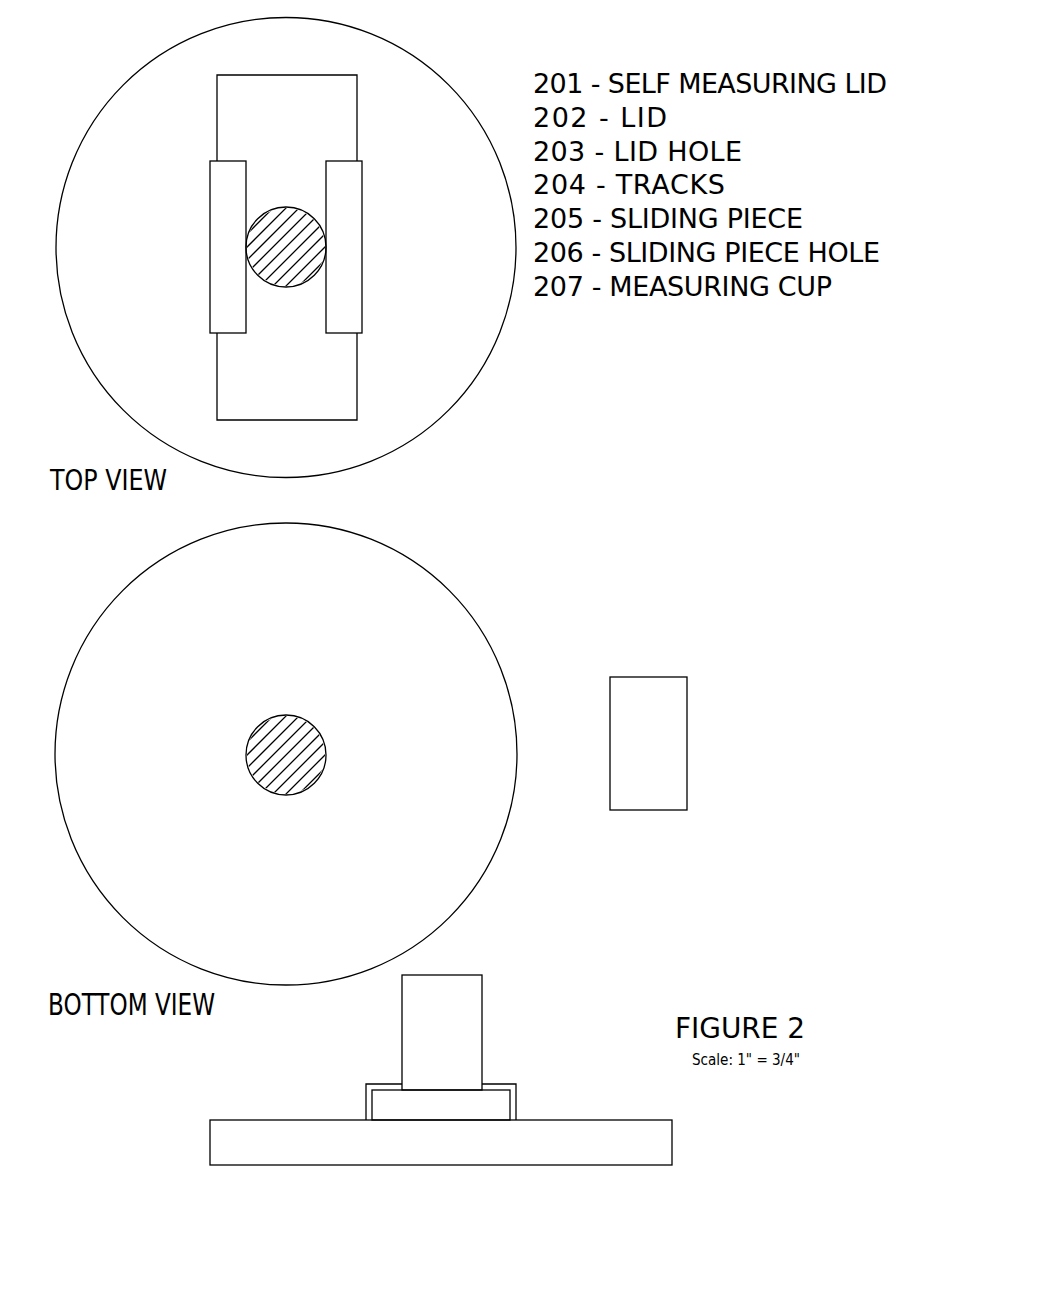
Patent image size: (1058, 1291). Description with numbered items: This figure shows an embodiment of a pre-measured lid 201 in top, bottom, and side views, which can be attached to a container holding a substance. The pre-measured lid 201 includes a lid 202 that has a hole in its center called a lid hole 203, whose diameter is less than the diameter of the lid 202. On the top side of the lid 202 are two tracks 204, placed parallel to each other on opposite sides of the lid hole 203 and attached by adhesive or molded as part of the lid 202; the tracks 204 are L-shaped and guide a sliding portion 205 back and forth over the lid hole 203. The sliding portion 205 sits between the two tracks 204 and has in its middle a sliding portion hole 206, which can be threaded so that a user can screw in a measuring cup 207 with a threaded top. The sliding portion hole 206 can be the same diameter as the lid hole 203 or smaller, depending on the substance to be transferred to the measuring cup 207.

The pre-measured lid 201 is at (447, 68).
The lid 202 is at (405, 345).
The lid hole 203 is at (307, 747).
The tracks 204 is at (233, 322).
The sliding portion 205 is at (288, 403).
The sliding portion hole 206 is at (278, 230).
The measuring cup 207 is at (672, 715).